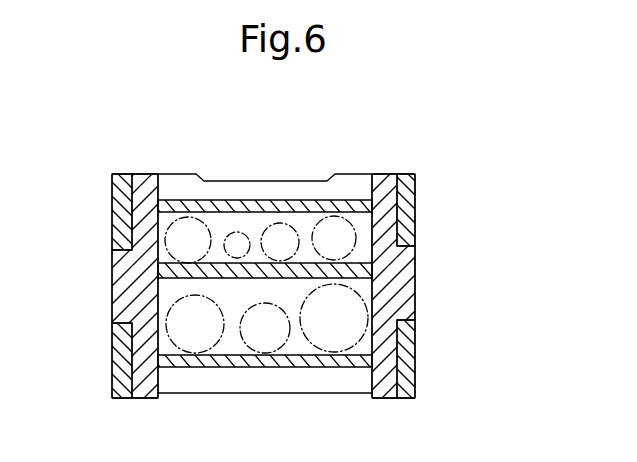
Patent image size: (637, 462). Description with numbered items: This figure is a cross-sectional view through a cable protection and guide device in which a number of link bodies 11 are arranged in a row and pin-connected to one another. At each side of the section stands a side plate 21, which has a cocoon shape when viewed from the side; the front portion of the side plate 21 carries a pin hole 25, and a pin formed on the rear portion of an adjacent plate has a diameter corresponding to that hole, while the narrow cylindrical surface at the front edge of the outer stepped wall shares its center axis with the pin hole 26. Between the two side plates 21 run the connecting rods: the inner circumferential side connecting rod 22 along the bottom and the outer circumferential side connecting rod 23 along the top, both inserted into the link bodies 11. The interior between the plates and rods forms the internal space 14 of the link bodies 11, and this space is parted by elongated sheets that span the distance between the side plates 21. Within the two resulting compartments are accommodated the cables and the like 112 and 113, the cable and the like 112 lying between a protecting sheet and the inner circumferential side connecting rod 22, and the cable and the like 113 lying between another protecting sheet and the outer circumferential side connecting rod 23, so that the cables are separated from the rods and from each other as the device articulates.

The link body 11 is at (312, 181).
The internal space 14 is at (218, 233).
The side plate 21 is at (117, 174).
The inner circumferential side connecting rod 22 is at (237, 383).
The outer circumferential side connecting rod 23 is at (259, 181).
The pin hole 25 is at (124, 253).
The pin hole 26 is at (122, 298).
The cable and the like 112 is at (333, 352).
The cable and the like 113 is at (258, 228).